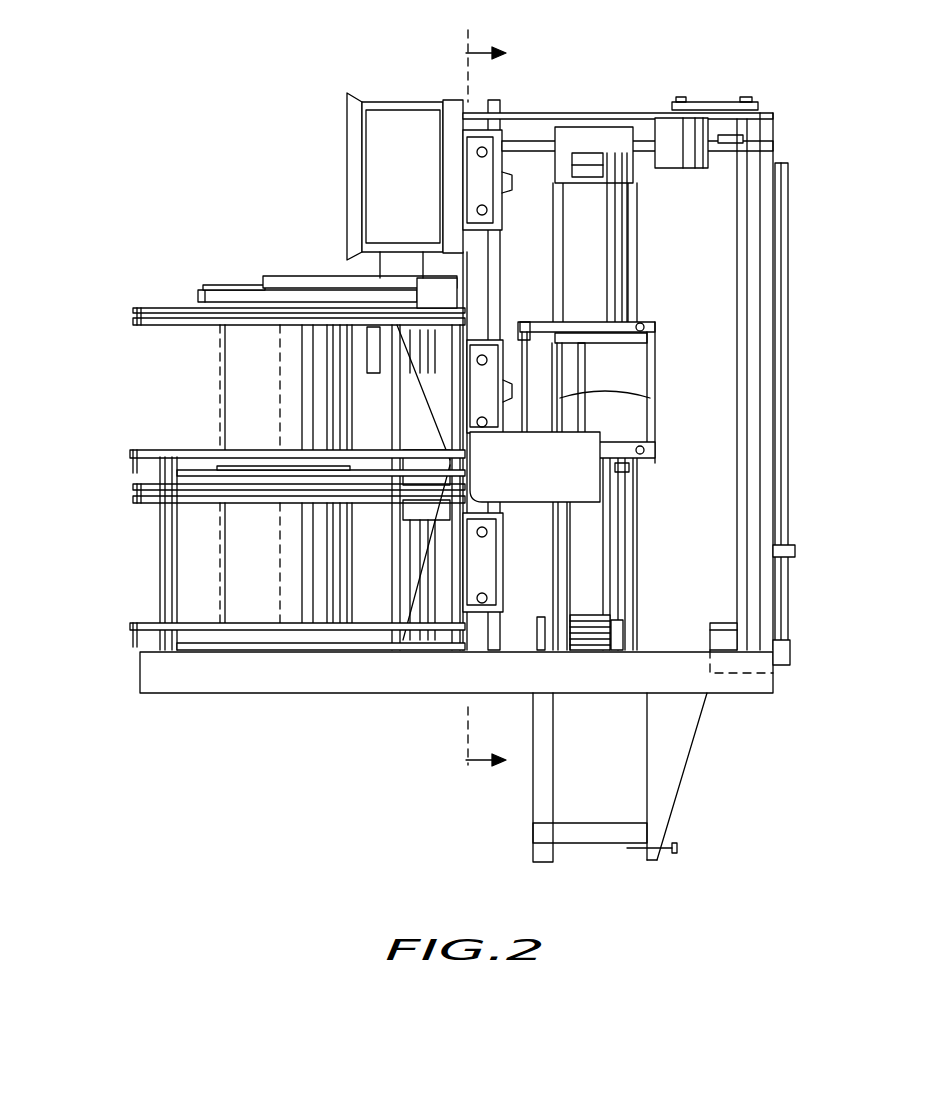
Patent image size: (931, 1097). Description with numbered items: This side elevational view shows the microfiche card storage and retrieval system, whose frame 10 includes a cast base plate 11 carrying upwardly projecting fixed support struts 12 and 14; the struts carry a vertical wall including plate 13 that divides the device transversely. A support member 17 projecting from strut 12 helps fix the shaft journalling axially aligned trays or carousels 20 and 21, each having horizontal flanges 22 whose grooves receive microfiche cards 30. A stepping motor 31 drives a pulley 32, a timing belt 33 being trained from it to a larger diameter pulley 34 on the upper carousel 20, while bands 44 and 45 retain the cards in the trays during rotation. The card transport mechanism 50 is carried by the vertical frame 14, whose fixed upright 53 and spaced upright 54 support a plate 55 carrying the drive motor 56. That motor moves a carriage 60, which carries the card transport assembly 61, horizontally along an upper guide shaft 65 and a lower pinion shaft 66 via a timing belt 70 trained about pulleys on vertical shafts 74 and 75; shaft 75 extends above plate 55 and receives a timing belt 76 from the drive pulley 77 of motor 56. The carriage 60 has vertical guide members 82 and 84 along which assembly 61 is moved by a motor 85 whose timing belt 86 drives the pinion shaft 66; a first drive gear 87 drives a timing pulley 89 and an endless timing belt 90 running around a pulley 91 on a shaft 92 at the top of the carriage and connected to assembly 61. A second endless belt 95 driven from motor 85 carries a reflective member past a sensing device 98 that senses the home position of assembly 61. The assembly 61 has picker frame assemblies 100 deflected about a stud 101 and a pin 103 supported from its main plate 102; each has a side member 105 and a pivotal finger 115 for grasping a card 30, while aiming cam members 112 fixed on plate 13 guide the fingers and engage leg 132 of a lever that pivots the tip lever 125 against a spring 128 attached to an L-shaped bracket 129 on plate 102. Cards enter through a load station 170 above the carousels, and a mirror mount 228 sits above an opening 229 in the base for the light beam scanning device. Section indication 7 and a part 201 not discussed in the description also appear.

The section line 7- 7 is at (481, 409).
The frame 10 is at (456, 703).
The cast base plate 11 is at (262, 688).
The fixed support strut 12 is at (395, 555).
The plate 13 is at (470, 262).
The fixed support strut 14 is at (768, 262).
The support member 17 is at (298, 277).
The upper carousel 20 is at (273, 405).
The lower carousel 21 is at (130, 488).
The flange 22 is at (135, 322).
The microfiche card 30 is at (535, 459).
The stepping motor 31 is at (366, 350).
The pulley 32 is at (423, 253).
The timing belt 33 is at (243, 292).
The larger diameter pulley 34 is at (205, 287).
The band 44 is at (130, 452).
The band 45 is at (130, 628).
The microfiche card transport mechanism 50 is at (605, 108).
The fixed upright 53 is at (472, 280).
The spaced upright 54 is at (768, 320).
The plate 55 is at (562, 112).
The drive motor 56 is at (690, 168).
The carriage 60 is at (640, 538).
The microfiche card transport assembly 61 is at (618, 403).
The upper guide shaft 65 is at (528, 182).
The pinion shaft 66 is at (710, 652).
The timing belt 70 is at (512, 140).
The shaft 74 is at (498, 238).
The shaft 75 is at (736, 563).
The timing belt 76 is at (712, 101).
The drive pulley 77 is at (680, 101).
The guide member 82 is at (638, 565).
The guide member 84 is at (556, 598).
The motor 85 is at (720, 622).
The timing belt 86 is at (780, 666).
The first drive gear 87 is at (590, 614).
The timing pulley 89 is at (622, 620).
The timing belt 90 is at (609, 540).
The pulley 91 is at (622, 176).
The shaft 92 is at (594, 171).
The second endless belt 95 is at (790, 498).
The sensing device 98 is at (795, 552).
The picker frame assembly 100 is at (585, 322).
The stud 101 is at (652, 328).
The main plate 102 is at (657, 356).
The pin 103 is at (658, 452).
The side member 105 is at (627, 472).
The aiming cam 112 is at (478, 183).
The pivotal finger 115 is at (523, 326).
The tip lever 125 is at (546, 416).
The spring 128 is at (657, 395).
The L-shaped bracket 129 is at (586, 368).
The leg 132 is at (565, 412).
The load station 170 is at (345, 130).
The tab 201 is at (505, 178).
The mirror mount 228 is at (575, 490).
The opening 229 is at (545, 550).